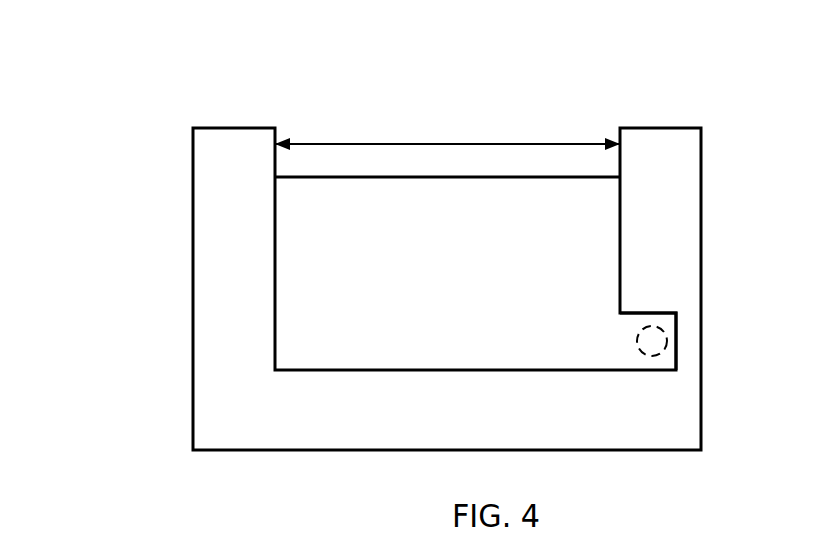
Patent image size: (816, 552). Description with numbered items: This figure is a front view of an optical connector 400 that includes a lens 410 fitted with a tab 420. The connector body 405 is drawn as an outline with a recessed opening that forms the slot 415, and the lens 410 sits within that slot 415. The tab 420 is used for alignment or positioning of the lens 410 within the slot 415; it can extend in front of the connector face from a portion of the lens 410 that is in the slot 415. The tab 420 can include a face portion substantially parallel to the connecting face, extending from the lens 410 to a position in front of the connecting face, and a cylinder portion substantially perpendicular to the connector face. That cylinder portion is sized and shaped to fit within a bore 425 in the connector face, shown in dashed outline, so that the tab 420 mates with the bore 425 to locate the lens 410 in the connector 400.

The optical connector 400 is at (208, 92).
The body / frame 405 is at (213, 258).
The lens 410 is at (595, 209).
The slot 415 is at (451, 144).
The tab 420 is at (650, 311).
The bore 425 is at (668, 338).